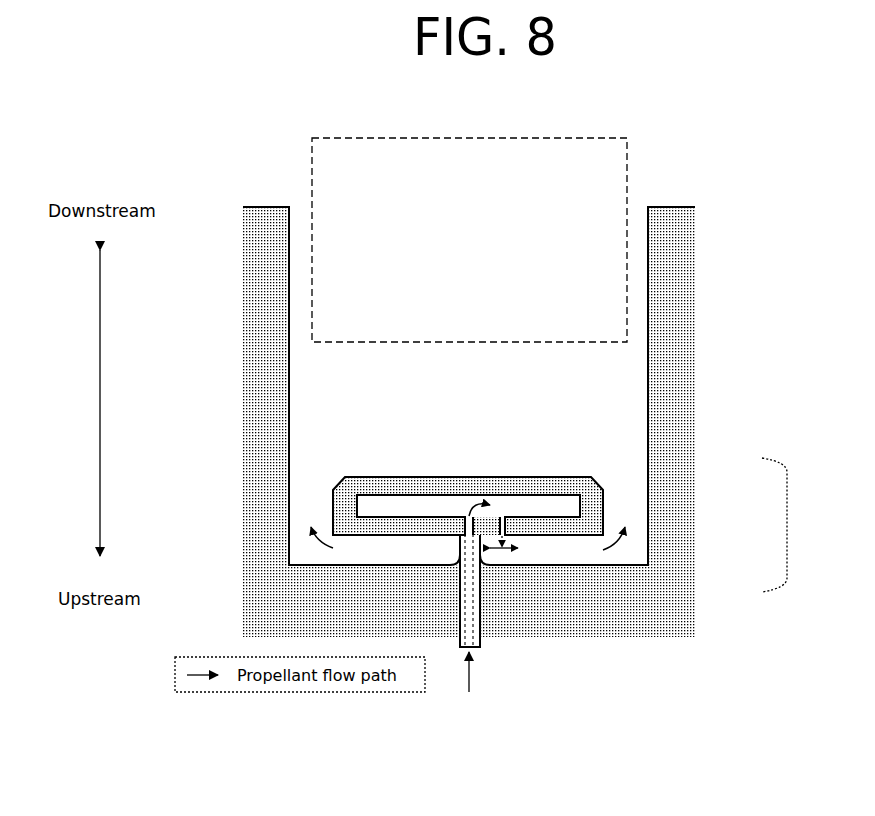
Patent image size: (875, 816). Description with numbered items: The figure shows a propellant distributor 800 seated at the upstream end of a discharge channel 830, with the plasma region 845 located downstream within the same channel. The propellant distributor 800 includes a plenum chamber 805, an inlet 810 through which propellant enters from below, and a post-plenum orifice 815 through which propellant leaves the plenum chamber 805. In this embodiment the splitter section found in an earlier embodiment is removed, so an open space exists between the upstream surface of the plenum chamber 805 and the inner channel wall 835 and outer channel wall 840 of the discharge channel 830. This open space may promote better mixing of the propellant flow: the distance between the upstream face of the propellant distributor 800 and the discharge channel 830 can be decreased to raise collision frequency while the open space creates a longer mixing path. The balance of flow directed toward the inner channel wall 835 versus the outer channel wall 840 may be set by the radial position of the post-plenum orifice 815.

The propellant distributor 800 is at (787, 525).
The plenum chamber 805 is at (380, 504).
The inlet 810 is at (492, 653).
The post-plenum orifice 815 is at (509, 507).
The discharge channel 830 is at (678, 160).
The inner channel wall 835 is at (225, 207).
The outer channel wall 840 is at (723, 220).
The plasma region 845 is at (469, 240).